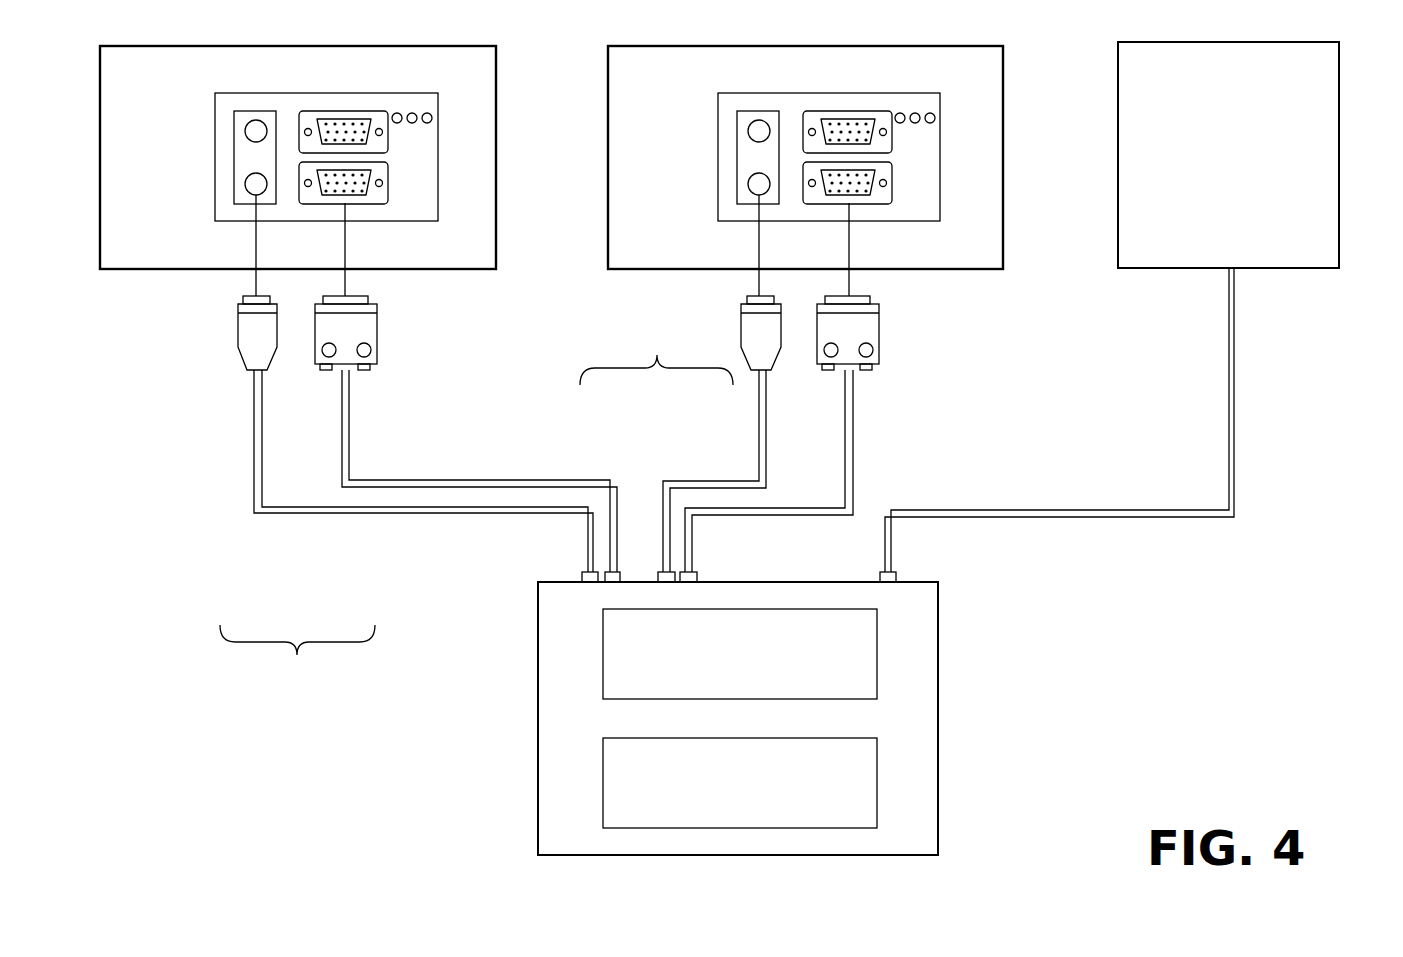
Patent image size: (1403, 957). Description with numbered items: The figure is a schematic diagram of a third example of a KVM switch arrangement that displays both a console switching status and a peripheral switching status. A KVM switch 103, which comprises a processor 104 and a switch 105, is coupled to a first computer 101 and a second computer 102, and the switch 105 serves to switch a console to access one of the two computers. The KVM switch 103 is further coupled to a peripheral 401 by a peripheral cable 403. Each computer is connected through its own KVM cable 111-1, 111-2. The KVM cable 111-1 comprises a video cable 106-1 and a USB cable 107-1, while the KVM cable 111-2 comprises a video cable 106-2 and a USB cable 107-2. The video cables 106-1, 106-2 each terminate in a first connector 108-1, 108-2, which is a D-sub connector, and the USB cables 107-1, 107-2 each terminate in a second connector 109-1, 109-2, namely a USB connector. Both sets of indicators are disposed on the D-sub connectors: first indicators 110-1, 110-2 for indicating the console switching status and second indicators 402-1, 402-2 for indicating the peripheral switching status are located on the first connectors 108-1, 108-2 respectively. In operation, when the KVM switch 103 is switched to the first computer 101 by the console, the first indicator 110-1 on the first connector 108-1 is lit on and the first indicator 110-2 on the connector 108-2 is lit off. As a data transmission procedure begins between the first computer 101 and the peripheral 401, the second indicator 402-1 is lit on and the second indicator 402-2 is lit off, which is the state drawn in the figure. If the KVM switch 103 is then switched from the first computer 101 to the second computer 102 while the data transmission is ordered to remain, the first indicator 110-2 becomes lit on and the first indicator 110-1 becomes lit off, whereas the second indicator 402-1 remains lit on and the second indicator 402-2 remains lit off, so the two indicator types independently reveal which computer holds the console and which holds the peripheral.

The first computer 101 is at (495, 167).
The second computer 102 is at (1003, 167).
The KVM switch 103 is at (938, 795).
The processor 104 is at (660, 798).
The switch 105 is at (660, 668).
The video cable 106-1 is at (400, 485).
The video cable 106-2 is at (812, 513).
The USB cable 107-1 is at (280, 512).
The USB cable 107-2 is at (695, 487).
The first connector 108-1 is at (363, 327).
The first connector 108-2 is at (866, 327).
The second connector 109-1 is at (258, 322).
The second connector 109-2 is at (762, 322).
The first indicator 110-1 is at (365, 350).
The first indicator 110-2 is at (867, 350).
The KVM cable 111-1 is at (297, 661).
The KVM cable 111-2 is at (656, 357).
The peripheral 401 is at (1339, 168).
The second indicator 402-1 is at (332, 345).
The second indicator 402-2 is at (834, 345).
The peripheral cable 403 is at (1234, 392).